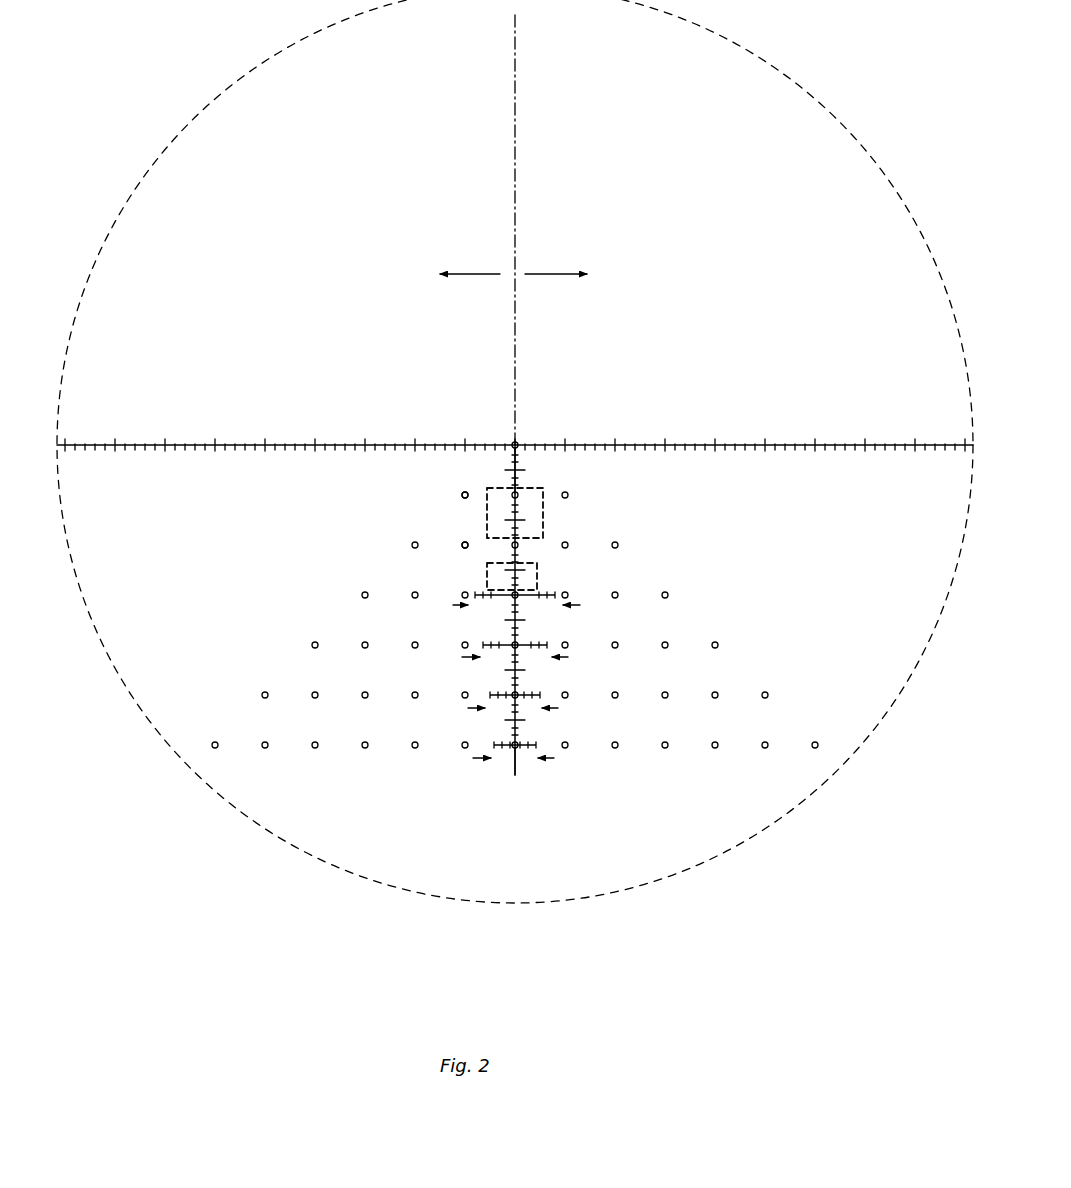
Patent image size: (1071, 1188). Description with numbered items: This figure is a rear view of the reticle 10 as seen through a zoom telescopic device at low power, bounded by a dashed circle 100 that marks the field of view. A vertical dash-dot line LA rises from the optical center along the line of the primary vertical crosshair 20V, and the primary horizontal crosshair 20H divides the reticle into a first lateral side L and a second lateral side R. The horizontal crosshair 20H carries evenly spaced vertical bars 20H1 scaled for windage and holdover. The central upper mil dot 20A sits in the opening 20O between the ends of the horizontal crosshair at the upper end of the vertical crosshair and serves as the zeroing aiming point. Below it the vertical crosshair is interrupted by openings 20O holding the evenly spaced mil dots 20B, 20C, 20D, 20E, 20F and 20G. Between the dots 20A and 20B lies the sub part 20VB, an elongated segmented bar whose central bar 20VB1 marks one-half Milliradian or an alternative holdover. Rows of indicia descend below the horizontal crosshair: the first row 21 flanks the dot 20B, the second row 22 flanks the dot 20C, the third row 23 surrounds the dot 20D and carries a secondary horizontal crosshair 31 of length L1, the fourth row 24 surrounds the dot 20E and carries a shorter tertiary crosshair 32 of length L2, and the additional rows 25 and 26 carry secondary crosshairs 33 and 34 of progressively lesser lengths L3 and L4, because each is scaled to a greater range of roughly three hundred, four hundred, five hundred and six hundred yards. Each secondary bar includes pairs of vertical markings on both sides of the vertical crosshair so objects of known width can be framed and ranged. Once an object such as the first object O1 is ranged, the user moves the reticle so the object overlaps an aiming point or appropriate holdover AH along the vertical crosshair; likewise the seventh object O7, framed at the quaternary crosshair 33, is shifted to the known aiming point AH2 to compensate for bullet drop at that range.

The field of view / objective circle 100 is at (893, 180).
The reticle 10 is at (692, 288).
The longitudinal axis LA is at (515, 234).
The first lateral side L is at (459, 274).
The second lateral side R is at (567, 274).
The primary horizontal crosshair 20H is at (115, 444).
The vertical bars 20H1 is at (315, 444).
The central upper mil dot 20A is at (515, 443).
The sub part of the primary vertical crosshair 20VB is at (512, 474).
The central bar 20VB1 is at (520, 492).
The openings 20O is at (517, 442).
The mil dot 20B is at (518, 494).
The aiming point or appropriate holdover AH is at (508, 509).
The first object O1 is at (543, 522).
The mil dot 20C is at (518, 547).
The known aiming point AH2 is at (503, 566).
The seventh object O7 is at (538, 581).
The secondary horizontal crosshair 31 is at (485, 594).
The central mil dot 20D is at (518, 598).
The overall length of the secondary horizontal crosshair L1 is at (529, 613).
The tertiary horizontal crosshair 32 is at (490, 643).
The central mil dot 20E is at (518, 648).
The length of the tertiary horizontal crosshair L2 is at (527, 658).
The quaternary horizontal crosshair 33 is at (495, 694).
The mil dot 20F is at (518, 698).
The length of the quaternary horizontal crosshair L3 is at (525, 708).
The secondary horizontal crosshair 34 is at (500, 744).
The mil dot 20G is at (518, 748).
The length of the secondary horizontal crosshair L4 is at (525, 759).
The primary vertical crosshair 20V is at (516, 776).
The first horizontal row of indicia 21 is at (598, 492).
The second horizontal row of indicia 22 is at (650, 540).
The third horizontal row of indicia 23 is at (692, 588).
The fourth row of indicia 24 is at (757, 637).
The fifth row of indicia 25 is at (790, 691).
The sixth row of indicia 26 is at (850, 748).